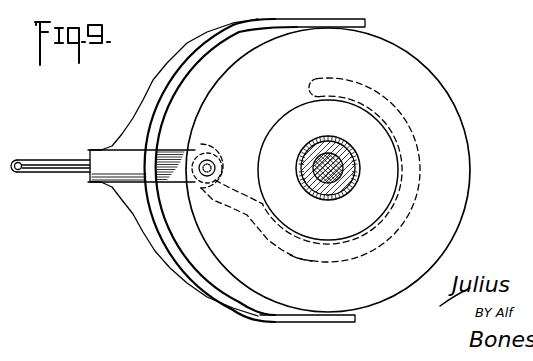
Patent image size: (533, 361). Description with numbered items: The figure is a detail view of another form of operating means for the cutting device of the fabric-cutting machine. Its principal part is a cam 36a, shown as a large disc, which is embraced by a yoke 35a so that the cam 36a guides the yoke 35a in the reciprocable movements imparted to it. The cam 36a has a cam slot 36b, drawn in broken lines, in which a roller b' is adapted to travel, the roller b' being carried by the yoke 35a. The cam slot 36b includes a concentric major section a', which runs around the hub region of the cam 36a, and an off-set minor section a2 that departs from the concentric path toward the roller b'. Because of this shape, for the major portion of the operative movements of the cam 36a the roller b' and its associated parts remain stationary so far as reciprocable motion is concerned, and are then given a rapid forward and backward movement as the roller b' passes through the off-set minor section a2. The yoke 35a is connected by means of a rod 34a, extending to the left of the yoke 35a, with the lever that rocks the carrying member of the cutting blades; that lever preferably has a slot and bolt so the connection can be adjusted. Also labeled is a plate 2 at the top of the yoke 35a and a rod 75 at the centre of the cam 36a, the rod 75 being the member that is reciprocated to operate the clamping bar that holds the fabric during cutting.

The plate 2 is at (317, 13).
The yoke 35a is at (151, 100).
The rod 34a is at (40, 170).
The cam 36a is at (445, 118).
The cam slot 36b is at (313, 263).
The rod 75 is at (350, 188).
The concentric major section a' is at (357, 170).
The off-set minor section a2 is at (223, 208).
The roller b' is at (216, 151).